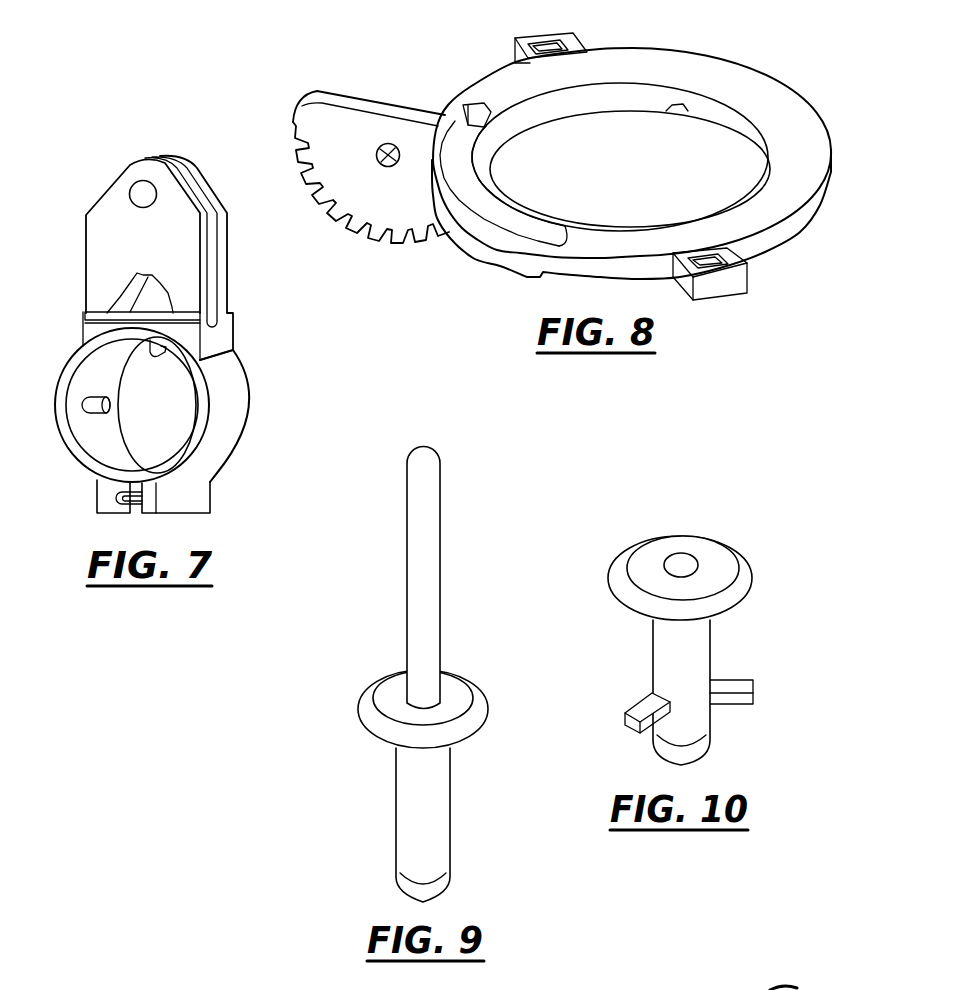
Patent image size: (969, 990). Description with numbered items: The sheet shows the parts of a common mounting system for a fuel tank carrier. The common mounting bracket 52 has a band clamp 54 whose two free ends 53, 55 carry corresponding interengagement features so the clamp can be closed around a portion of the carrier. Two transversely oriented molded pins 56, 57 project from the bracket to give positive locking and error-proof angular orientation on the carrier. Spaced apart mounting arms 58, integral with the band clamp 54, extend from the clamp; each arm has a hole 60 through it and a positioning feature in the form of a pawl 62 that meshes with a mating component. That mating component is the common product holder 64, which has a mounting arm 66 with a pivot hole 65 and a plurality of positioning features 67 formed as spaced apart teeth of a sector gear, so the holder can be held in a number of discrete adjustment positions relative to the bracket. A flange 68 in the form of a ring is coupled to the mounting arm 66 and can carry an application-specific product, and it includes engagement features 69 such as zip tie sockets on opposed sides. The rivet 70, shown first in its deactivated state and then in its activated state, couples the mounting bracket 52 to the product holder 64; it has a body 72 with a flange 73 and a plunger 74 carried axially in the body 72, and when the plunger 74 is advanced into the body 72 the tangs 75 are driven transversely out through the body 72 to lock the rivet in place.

In FIG. 7, the common mounting bracket 52 is at (288, 462).
In FIG. 7, the free end 53 is at (205, 495).
In FIG. 7, the band clamp 54 is at (286, 398).
In FIG. 7, the free end 55 is at (112, 512).
In FIG. 7, the molded pin 56 is at (110, 405).
In FIG. 7, the molded pin 57 is at (152, 356).
In FIG. 7, the mounting arm 58 is at (212, 260).
In FIG. 7, the hole 60 is at (135, 205).
In FIG. 7, the pawl 62 is at (145, 297).
In FIG. 8, the common product holder 64 is at (698, 33).
In FIG. 8, the pivot hole 65 is at (377, 156).
In FIG. 8, the mounting arm 66 is at (310, 70).
In FIG. 8, the positioning features 67 is at (308, 203).
In FIG. 8, the flange 68 is at (813, 262).
In FIG. 8, the engagement features 69 is at (546, 44).
In FIG. 9, the rivet 70 is at (474, 624).
In FIG. 9, the body 72 is at (432, 782).
In FIG. 10, the body 72 is at (703, 646).
In FIG. 9, the flange 73 is at (484, 712).
In FIG. 10, the flange 73 is at (743, 578).
In FIG. 9, the plunger 74 is at (433, 518).
In FIG. 10, the tangs 75 is at (638, 706).